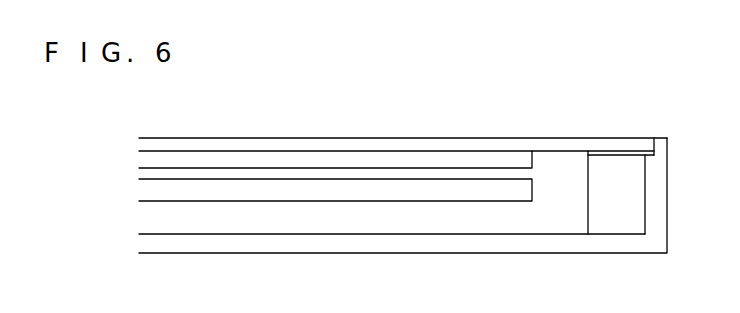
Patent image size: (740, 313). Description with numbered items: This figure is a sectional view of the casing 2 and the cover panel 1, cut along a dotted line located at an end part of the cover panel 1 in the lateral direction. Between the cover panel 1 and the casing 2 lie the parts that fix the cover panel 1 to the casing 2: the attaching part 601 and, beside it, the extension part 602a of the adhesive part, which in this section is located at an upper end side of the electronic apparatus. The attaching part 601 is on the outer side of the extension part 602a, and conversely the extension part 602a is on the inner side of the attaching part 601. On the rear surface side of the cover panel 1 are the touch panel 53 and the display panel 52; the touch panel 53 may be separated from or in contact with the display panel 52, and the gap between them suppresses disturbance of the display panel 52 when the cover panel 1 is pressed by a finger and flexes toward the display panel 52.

The cover panel 1 is at (387, 143).
The casing 2 is at (455, 247).
The display panel 52 is at (247, 187).
The touch panel 53 is at (506, 160).
The attaching part 601 is at (597, 151).
The extension part 602a is at (628, 151).